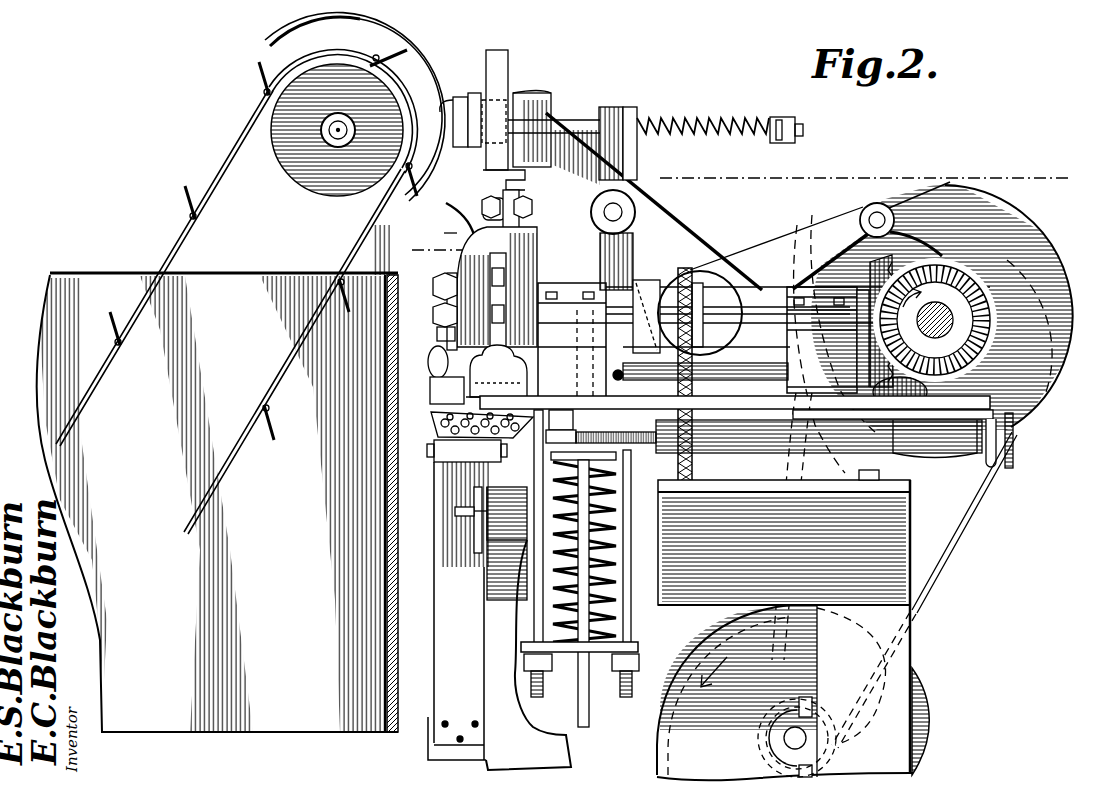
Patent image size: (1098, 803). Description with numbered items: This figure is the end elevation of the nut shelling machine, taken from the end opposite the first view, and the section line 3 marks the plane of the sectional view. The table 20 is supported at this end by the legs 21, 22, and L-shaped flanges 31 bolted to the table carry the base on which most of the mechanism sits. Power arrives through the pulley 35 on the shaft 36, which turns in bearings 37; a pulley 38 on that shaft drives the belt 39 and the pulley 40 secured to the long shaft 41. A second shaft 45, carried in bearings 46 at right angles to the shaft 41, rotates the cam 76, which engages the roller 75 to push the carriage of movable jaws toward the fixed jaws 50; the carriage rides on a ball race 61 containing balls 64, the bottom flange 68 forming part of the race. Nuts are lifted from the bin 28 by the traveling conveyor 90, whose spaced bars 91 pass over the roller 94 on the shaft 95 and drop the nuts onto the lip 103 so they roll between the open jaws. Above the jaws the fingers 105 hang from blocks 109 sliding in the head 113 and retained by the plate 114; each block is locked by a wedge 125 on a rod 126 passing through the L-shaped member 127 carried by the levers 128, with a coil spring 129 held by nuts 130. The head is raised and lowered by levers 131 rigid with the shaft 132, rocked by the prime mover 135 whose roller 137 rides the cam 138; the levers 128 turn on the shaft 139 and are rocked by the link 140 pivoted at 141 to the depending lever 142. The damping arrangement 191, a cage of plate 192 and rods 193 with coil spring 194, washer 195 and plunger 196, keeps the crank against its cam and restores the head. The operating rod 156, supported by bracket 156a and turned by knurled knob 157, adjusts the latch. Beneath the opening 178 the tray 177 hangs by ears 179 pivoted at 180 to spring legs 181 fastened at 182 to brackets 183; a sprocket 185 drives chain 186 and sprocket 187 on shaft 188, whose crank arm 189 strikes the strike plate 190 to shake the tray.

The section line 3 is at (744, 209).
The table 20 is at (895, 497).
The leg 21 is at (911, 649).
The leg 22 is at (560, 762).
The bin 28 is at (172, 730).
The L-shaped flanges 31 is at (799, 500).
The pulley 35 is at (922, 707).
The shaft 36 is at (784, 740).
The bearings 37 is at (810, 726).
The pulley 38 is at (852, 676).
The belt 39 is at (975, 515).
The pulley 40 is at (994, 220).
The shaft 41 is at (952, 316).
The second shaft 45 is at (750, 300).
The bearings 46 is at (703, 343).
The fixed jaws 50 is at (745, 410).
The ball race 61 is at (430, 385).
The balls 64 is at (430, 360).
The bottom flange 68 is at (438, 337).
The roller 75 is at (452, 262).
The cam 76 is at (525, 250).
The traveling conveyor 90 is at (225, 166).
The spaced bars 91 is at (262, 72).
The roller 94 is at (286, 172).
The shaft 95 is at (337, 138).
The lip 103 is at (466, 226).
The fingers 105 is at (535, 232).
The block 109 is at (497, 50).
The head 113 is at (530, 90).
The plate 114 is at (480, 173).
The wedge 125 is at (447, 100).
The rod 126 is at (583, 125).
The L-shaped member 127 is at (643, 104).
The levers 128 is at (625, 160).
The coil spring 129 is at (702, 118).
The nuts 130 is at (783, 117).
The levers 131 is at (663, 235).
The shaft 132 is at (721, 288).
The prime mover 135 is at (751, 243).
The roller 137 is at (892, 204).
The cam 138 is at (914, 240).
The shaft 139 is at (622, 212).
The link 140 is at (750, 352).
The pivot 141 is at (623, 378).
The depending lever 142 is at (600, 265).
The operating rod 156 is at (831, 446).
The bracket 156a is at (986, 410).
The knurled knob 157 is at (1013, 450).
The tray 177 is at (436, 425).
The opening 178 is at (452, 400).
The ears 179 is at (446, 466).
The pivotal connection 180 is at (434, 450).
The legs 181 is at (448, 590).
The securing point 182 is at (444, 727).
The brackets 183 is at (445, 757).
The sprocket 185 is at (688, 268).
The chain 186 is at (692, 462).
The sprocket 187 is at (690, 548).
The shaft 188 is at (478, 555).
The crank arm 189 is at (455, 514).
The strike plate 190 is at (467, 500).
The damping arrangement 191 is at (645, 627).
The plate 192 is at (575, 660).
The rods 193 is at (535, 620).
The coil spring 194 is at (617, 552).
The washer 195 is at (620, 452).
The plunger 196 is at (590, 707).